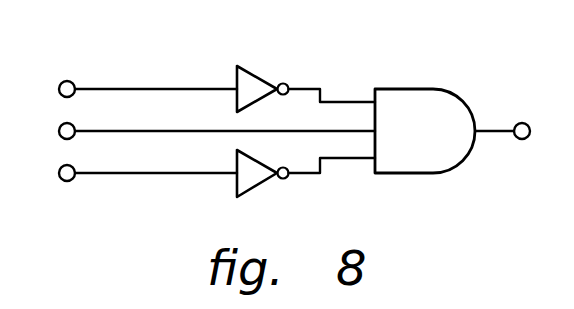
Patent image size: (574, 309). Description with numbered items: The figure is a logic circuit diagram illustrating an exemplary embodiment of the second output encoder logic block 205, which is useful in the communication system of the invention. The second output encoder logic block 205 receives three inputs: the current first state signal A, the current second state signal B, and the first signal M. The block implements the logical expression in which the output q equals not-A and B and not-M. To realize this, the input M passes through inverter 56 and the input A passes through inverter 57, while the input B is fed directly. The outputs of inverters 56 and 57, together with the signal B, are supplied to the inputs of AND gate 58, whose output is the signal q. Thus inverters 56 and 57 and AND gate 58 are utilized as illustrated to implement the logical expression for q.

The second output encoder logic block 205 is at (194, 50).
The inverter 56 is at (261, 72).
The inverter 57 is at (257, 186).
The AND gate 58 is at (417, 88).